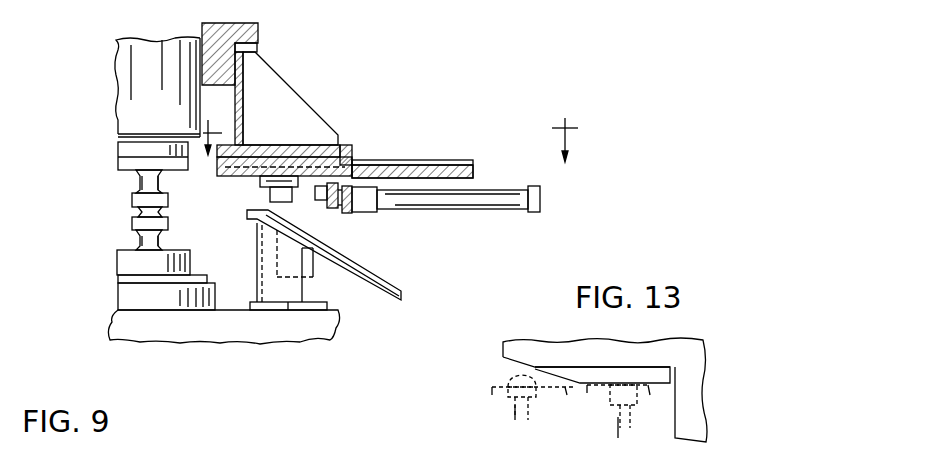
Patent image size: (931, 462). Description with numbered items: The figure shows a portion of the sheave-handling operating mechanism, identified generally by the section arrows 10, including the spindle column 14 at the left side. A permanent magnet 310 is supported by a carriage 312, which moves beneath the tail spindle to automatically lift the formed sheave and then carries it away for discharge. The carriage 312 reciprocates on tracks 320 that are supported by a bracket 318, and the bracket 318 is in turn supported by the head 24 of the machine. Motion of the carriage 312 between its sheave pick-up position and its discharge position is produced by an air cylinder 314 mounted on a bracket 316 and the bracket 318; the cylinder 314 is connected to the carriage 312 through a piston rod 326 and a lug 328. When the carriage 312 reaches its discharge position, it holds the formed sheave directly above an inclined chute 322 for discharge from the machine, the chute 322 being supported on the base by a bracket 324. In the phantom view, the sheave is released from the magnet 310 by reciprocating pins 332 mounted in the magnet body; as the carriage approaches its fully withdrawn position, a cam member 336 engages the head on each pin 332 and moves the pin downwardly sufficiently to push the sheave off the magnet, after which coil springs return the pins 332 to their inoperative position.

In FIG. 9, the section line 10- 10 is at (390, 131).
In FIG. 9, the spindle shaft 14 is at (160, 183).
In FIG. 9, the head 24 is at (258, 36).
In FIG. 9, the magnet 310 is at (270, 195).
In FIG. 9, the carriage 312 is at (411, 165).
In FIG. 9, the air cylinder 314 is at (458, 203).
In FIG. 9, the bracket 316 is at (345, 214).
In FIG. 9, the bracket 318 is at (303, 117).
In FIG. 9, the tracks 320 is at (342, 145).
In FIG. 9, the chute 322 is at (392, 280).
In FIG. 9, the bracket 324 is at (303, 282).
In FIG. 9, the piston rod 326 is at (358, 212).
In FIG. 9, the lug 328 is at (332, 210).
In FIG. 13, the reciprocating pin 332 is at (513, 414).
In FIG. 13, the cam member 336 is at (648, 368).